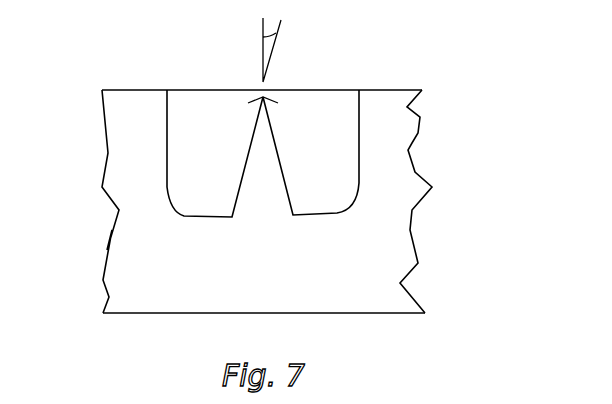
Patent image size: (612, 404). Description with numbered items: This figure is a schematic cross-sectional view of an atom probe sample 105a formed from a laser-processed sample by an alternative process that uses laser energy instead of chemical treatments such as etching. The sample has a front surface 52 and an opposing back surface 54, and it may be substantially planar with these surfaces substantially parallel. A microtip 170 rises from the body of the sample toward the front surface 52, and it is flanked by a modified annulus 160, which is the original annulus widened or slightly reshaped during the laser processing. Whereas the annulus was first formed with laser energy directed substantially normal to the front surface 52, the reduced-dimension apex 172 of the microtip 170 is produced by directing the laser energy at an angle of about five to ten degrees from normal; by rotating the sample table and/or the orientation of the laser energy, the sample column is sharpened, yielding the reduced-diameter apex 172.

The front surface 52 is at (137, 90).
The back surface 54 is at (137, 313).
The atom probe sample 105a is at (440, 165).
The modified annulus 160 is at (307, 135).
The microtip 170 is at (255, 158).
The reduced-dimension apex 172 is at (258, 100).